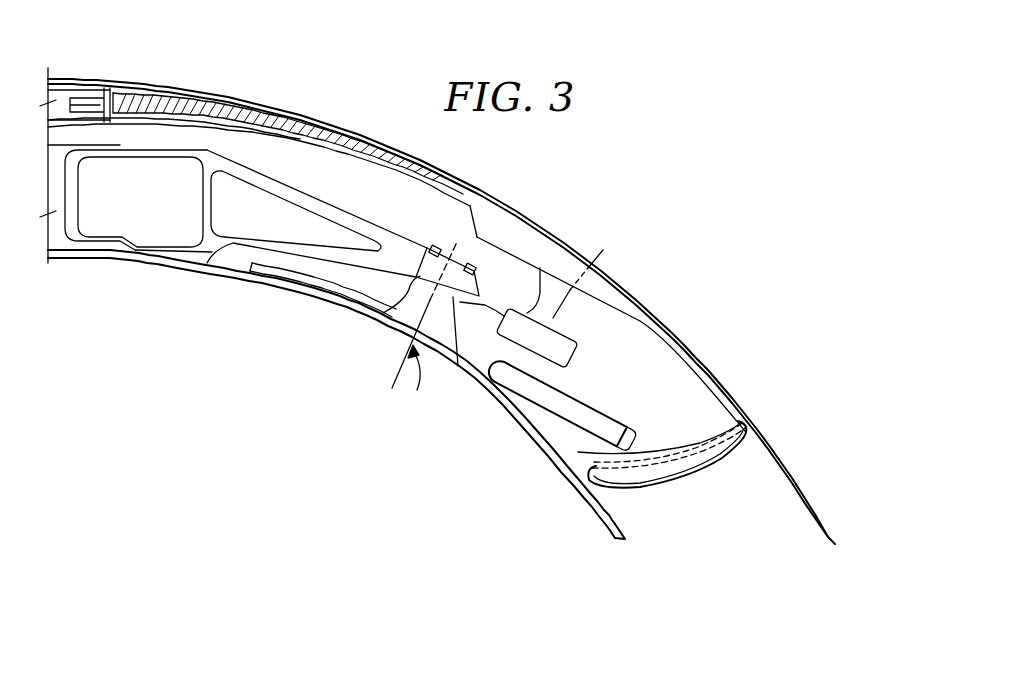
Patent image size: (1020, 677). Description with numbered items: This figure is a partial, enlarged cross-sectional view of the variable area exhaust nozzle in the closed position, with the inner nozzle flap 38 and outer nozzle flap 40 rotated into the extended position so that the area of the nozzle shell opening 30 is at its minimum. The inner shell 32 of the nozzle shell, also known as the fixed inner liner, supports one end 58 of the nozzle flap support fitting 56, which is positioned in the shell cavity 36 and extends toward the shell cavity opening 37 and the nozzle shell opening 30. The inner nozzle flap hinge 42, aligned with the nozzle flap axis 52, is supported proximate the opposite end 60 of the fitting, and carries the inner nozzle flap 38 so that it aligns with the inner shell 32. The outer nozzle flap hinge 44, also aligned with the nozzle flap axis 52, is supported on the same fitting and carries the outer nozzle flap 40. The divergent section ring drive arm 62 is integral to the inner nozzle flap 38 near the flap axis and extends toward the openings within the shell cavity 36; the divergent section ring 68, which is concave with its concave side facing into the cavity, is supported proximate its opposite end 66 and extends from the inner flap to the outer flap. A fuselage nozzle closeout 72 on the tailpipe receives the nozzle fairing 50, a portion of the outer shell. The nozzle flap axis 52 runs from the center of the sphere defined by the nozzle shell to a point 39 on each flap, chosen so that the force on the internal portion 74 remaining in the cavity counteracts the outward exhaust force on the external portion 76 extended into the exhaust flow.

The nozzle shell opening 30 is at (686, 605).
The inner shell 32 is at (163, 267).
The shell cavity 36 is at (321, 190).
The shell cavity opening 37 is at (653, 520).
The inner nozzle flap 38 is at (501, 410).
The point 39 is at (416, 360).
The outer nozzle flap 40 is at (711, 372).
The inner nozzle flap hinge 42 is at (405, 309).
The outer nozzle flap hinge 44 is at (582, 305).
The nozzle fairing 50 is at (323, 121).
The nozzle flap axis 52 is at (457, 247).
The nozzle flap support fitting 56 is at (215, 266).
The one end of the nozzle flap support fitting 58 is at (125, 214).
The opposite end of the nozzle flap support fitting 60 is at (423, 250).
The divergent section ring drive arm 62 is at (583, 383).
The opposite end of the divergent section ring drive arm 66 is at (624, 421).
The divergent section ring 68 is at (700, 479).
The fuselage nozzle closeout 72 is at (88, 80).
The internal portion of the nozzle flap 74 is at (498, 227).
The external portion of the nozzle flap 76 is at (828, 526).